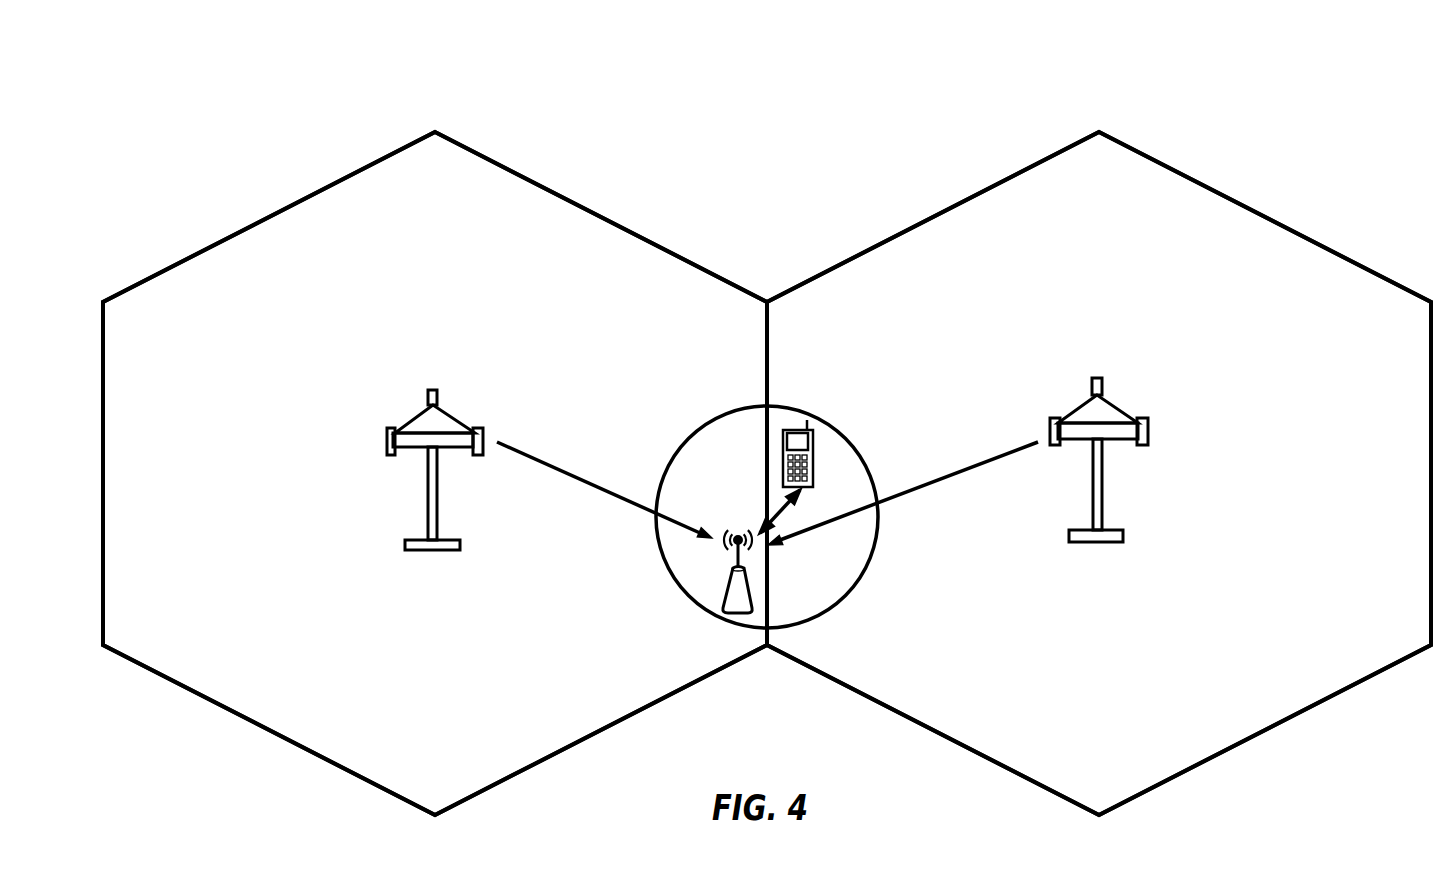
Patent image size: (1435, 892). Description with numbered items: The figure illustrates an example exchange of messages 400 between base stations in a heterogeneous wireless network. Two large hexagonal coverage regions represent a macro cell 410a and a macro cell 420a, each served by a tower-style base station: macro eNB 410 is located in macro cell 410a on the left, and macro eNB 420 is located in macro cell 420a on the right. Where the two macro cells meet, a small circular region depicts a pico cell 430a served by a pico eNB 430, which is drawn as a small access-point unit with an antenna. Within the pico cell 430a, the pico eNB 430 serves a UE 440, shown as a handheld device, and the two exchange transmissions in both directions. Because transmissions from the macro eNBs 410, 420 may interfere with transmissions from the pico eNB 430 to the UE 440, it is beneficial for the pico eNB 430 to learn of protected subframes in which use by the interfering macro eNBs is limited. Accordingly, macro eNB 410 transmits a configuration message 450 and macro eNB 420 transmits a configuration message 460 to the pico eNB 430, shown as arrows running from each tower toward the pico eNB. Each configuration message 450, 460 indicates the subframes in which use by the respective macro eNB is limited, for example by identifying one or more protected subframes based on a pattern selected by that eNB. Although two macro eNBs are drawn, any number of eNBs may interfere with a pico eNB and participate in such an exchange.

The exchange of messages 400 is at (200, 94).
The macro eNB 410 is at (417, 422).
The macro cell 410a is at (285, 207).
The macro eNB 420 is at (1117, 407).
The macro cell 420a is at (1250, 207).
The pico eNB 430 is at (750, 588).
The pico cell 430a is at (843, 602).
The UE 440 is at (783, 458).
The configuration message 450 is at (577, 476).
The configuration message 460 is at (938, 477).